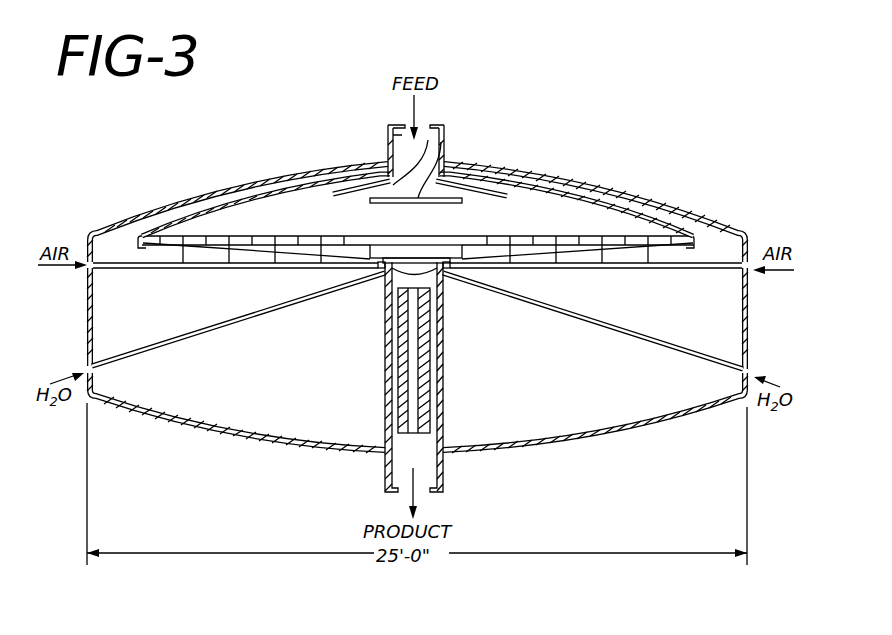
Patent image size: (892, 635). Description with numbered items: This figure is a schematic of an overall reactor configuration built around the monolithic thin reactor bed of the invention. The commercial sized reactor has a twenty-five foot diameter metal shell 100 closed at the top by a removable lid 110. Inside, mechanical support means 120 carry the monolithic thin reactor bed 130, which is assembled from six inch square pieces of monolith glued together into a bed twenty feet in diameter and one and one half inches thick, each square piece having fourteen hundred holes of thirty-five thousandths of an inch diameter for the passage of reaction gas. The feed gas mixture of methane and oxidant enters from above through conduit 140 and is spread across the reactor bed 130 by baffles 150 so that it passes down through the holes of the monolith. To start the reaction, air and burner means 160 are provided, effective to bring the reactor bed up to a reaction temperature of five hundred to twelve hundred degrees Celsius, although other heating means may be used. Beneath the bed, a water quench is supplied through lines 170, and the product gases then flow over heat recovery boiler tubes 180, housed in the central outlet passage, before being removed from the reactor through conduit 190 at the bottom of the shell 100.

The metal shell 100 is at (267, 445).
The removable lid 110 is at (245, 187).
The mechanical support means 120 is at (209, 250).
The monolithic thin reactor bed 130 is at (566, 236).
The conduit 140 is at (388, 150).
The baffles 150 is at (448, 165).
The air and burner means 160 is at (165, 270).
The water quench lines 170 is at (615, 325).
The heat recovery boiler tubes 180 is at (422, 358).
The conduit 190 is at (428, 468).